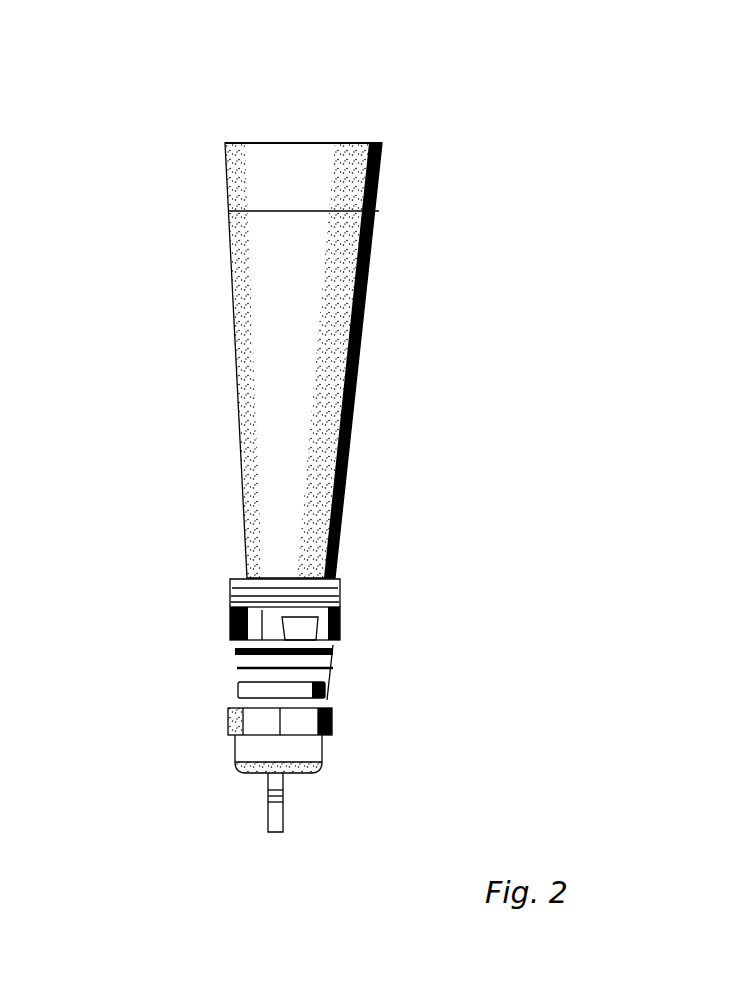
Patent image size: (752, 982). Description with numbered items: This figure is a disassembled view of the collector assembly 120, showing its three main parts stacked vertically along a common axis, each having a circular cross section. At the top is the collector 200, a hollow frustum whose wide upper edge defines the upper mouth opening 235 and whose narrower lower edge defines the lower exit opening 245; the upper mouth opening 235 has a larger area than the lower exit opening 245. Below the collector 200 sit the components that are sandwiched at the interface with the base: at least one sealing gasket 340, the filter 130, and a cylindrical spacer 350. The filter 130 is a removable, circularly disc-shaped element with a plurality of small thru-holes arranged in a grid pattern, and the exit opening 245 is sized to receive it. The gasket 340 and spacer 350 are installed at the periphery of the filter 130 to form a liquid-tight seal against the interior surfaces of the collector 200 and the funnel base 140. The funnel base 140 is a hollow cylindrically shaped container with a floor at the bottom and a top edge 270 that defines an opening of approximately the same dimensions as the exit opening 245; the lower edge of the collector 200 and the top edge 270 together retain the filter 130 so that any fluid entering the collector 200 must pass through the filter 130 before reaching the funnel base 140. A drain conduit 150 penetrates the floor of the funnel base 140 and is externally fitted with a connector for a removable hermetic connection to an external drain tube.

The collector assembly 120 is at (202, 233).
The upper mouth opening 235 is at (307, 138).
The collector 200 is at (360, 390).
The lower exit opening 245 is at (228, 628).
The sealing gasket 340 is at (338, 650).
The filter 130 is at (333, 668).
The spacer 350 is at (330, 695).
The top edge 270 is at (217, 726).
The funnel base 140 is at (333, 763).
The drain conduit 150 is at (262, 823).